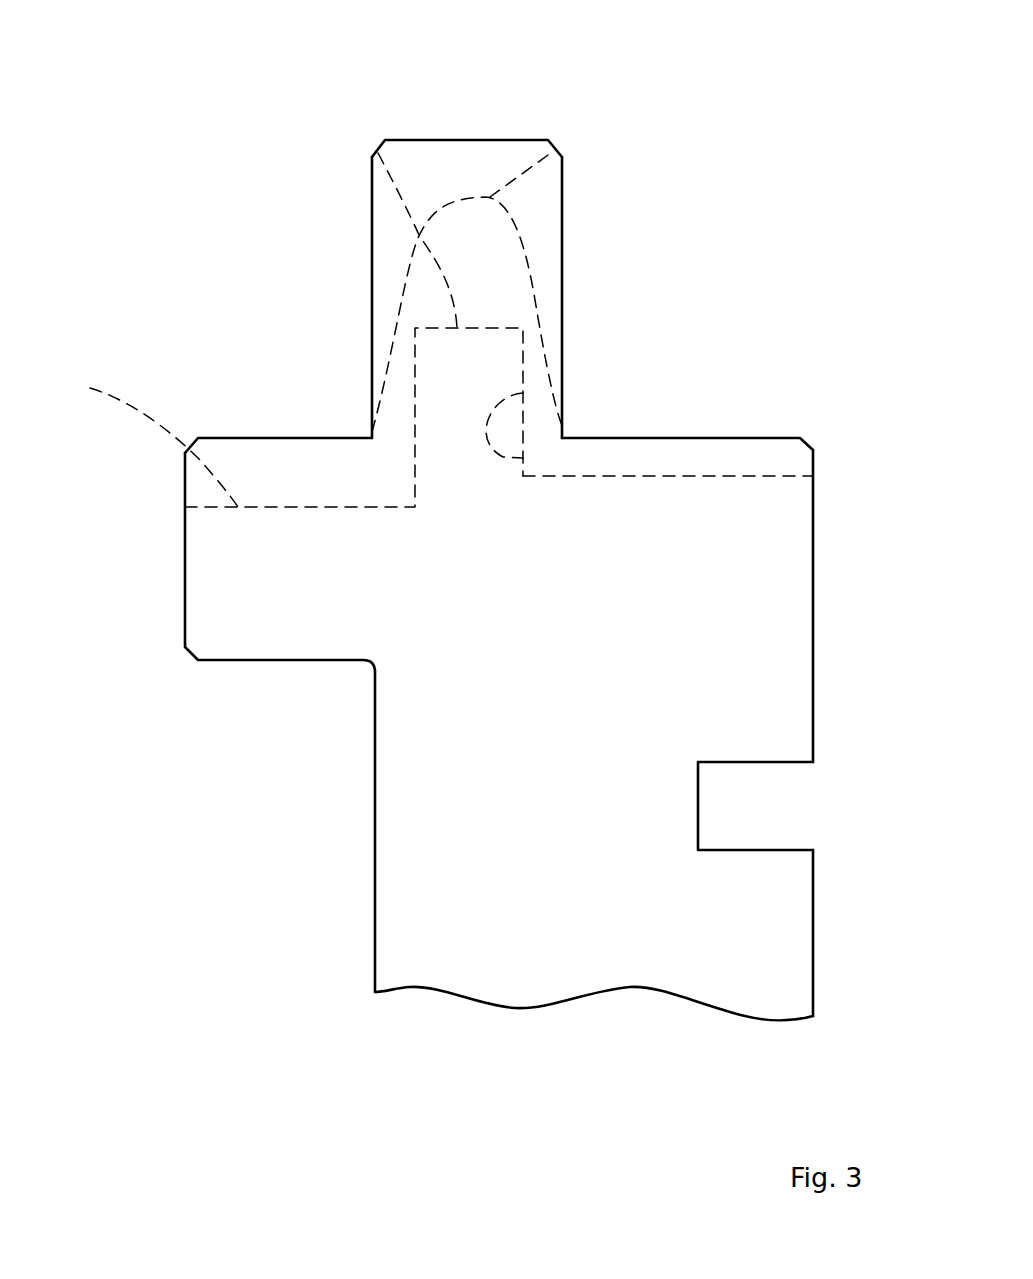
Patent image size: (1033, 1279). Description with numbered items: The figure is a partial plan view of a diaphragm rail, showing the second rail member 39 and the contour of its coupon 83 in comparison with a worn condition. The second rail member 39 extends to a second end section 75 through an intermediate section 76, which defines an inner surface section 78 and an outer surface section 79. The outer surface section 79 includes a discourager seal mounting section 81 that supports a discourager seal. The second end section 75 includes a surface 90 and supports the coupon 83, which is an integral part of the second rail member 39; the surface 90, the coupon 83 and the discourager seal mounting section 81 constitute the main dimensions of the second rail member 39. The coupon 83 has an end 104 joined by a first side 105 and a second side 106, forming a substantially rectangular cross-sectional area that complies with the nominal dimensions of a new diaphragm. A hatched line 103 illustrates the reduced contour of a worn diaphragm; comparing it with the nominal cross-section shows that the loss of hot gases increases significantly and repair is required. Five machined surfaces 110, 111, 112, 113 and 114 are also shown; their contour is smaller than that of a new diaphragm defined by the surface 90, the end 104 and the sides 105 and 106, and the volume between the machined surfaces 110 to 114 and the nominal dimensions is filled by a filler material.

The second rail member 39 is at (318, 835).
The second end section 75 is at (250, 548).
The intermediate section 76 is at (580, 960).
The inner surface section 78 is at (373, 922).
The outer surface section 79 is at (813, 920).
The discourager seal mounting section 81 is at (758, 762).
The coupon 83 is at (648, 180).
The surface 90 is at (253, 437).
The hatched line 103 is at (562, 148).
The end 104 is at (425, 140).
The first side 105 is at (372, 243).
The second side 106 is at (563, 255).
The machined surface 110 is at (692, 477).
The machined surface 111 is at (525, 458).
The machined surface 112 is at (375, 148).
The machined surface 113 is at (372, 418).
The machined surface 114 is at (134, 437).